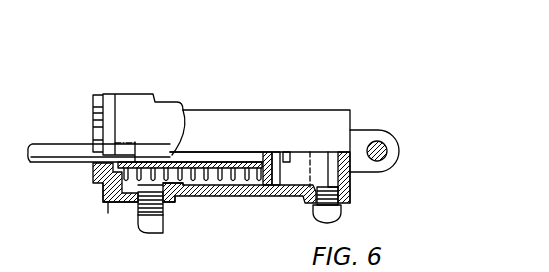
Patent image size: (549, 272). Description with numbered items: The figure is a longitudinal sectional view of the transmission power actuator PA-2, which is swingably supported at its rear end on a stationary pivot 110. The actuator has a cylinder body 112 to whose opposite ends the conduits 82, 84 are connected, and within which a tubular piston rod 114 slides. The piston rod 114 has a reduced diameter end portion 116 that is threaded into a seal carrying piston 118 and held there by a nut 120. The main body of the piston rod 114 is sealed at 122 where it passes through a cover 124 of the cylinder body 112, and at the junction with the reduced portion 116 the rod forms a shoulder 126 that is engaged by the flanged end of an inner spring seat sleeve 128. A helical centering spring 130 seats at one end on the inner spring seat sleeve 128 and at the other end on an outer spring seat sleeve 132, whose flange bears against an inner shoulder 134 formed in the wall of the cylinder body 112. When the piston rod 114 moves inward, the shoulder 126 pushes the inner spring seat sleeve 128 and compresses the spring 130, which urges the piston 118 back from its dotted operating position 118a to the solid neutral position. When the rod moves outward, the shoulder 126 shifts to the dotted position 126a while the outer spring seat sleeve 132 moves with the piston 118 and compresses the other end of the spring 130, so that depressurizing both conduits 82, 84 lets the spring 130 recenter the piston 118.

The piston rod 114 is at (53, 150).
The shoulder 126 is at (185, 110).
The dotted line position of shoulder 126a is at (137, 132).
The seal carrying piston 118 is at (277, 150).
The nut 120 is at (290, 150).
The dotted line operating position of piston 118a is at (318, 167).
The transmission power actuator PA-2 is at (280, 117).
The reduced diameter end portion 116 is at (205, 152).
The helical centering spring 130 is at (246, 160).
The outer spring seat sleeve 132 is at (240, 195).
The cylinder body 112 is at (271, 196).
The inner shoulder 134 is at (173, 198).
The conduit 82 is at (340, 212).
The stationary pivot 110 is at (390, 150).
The seal 122 is at (97, 172).
The inner spring seat sleeve 128 is at (105, 187).
The cover 124 is at (108, 205).
The conduit 84 is at (160, 220).